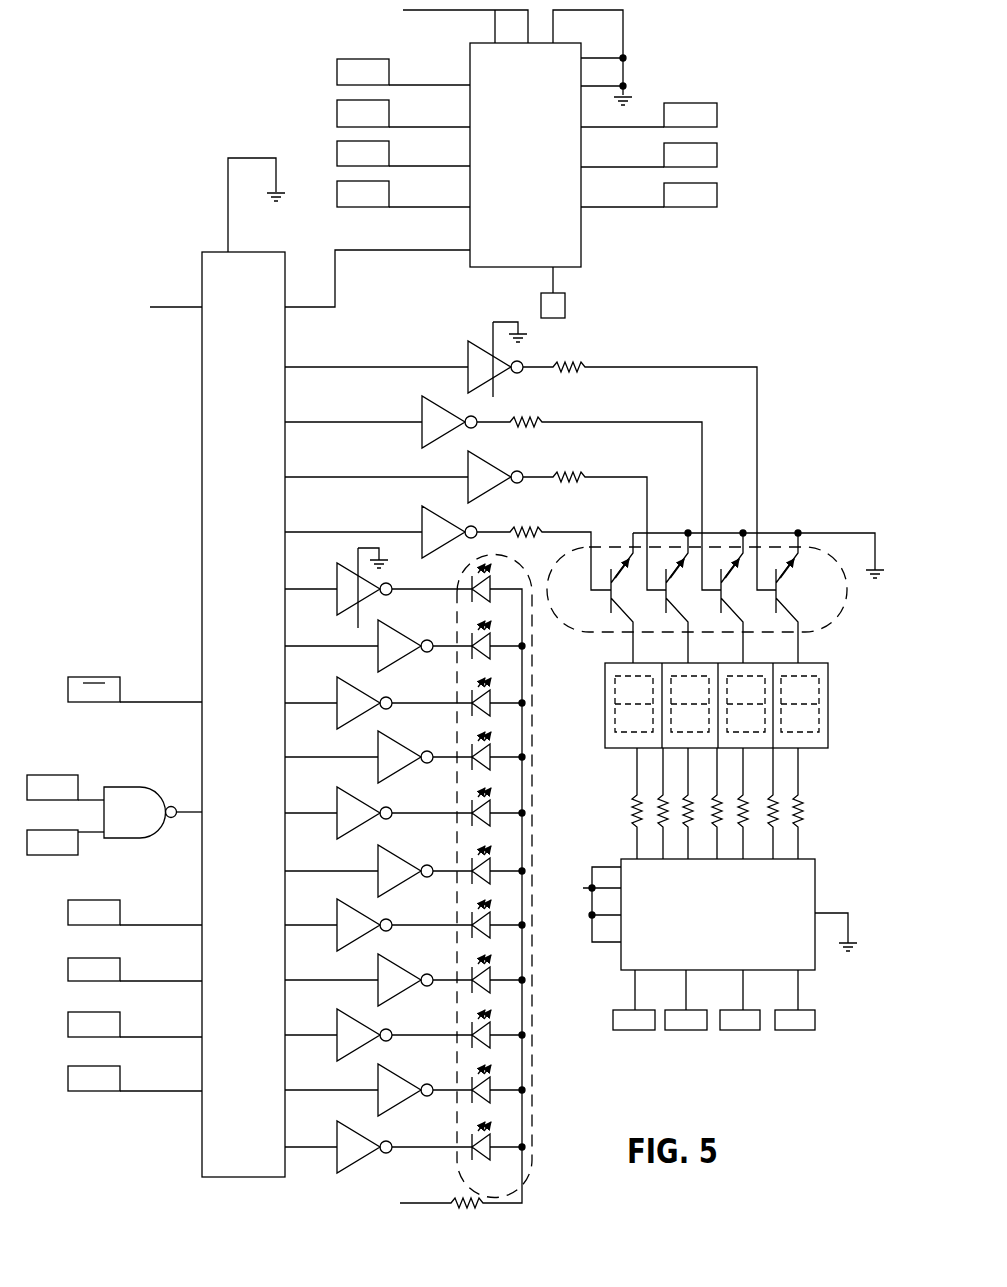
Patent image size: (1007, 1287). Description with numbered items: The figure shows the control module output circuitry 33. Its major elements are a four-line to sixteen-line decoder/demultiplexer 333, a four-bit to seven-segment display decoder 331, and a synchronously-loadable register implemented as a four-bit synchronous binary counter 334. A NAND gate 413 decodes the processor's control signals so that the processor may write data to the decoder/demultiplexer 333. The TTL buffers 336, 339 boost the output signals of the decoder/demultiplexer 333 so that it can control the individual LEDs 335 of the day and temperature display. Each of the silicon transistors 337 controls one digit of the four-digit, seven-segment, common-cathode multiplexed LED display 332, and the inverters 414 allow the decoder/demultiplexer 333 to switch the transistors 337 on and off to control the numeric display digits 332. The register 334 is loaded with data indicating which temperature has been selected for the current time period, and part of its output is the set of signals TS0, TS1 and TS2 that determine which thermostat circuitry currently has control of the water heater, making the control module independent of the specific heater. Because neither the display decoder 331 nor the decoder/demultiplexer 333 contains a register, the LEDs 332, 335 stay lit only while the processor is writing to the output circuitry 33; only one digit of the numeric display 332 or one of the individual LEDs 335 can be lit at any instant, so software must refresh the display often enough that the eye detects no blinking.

The control module output circuitry 33 is at (230, 118).
The four-bit to seven-segment display decoder 331 is at (696, 929).
The four-digit, seven-segment, common-cathode multiplexed LED display 332 is at (820, 744).
The four-line to sixteen-line decoder/demultiplexer 333 is at (260, 480).
The four-bit synchronous binary counter 334 is at (507, 166).
The individual LEDs 335 is at (526, 1036).
The TTL buffers 336 is at (395, 872).
The silicon transistors 337 is at (848, 604).
The TTL buffers 339 is at (350, 693).
The NAND gate 413 is at (146, 805).
The inverters 414 is at (472, 362).